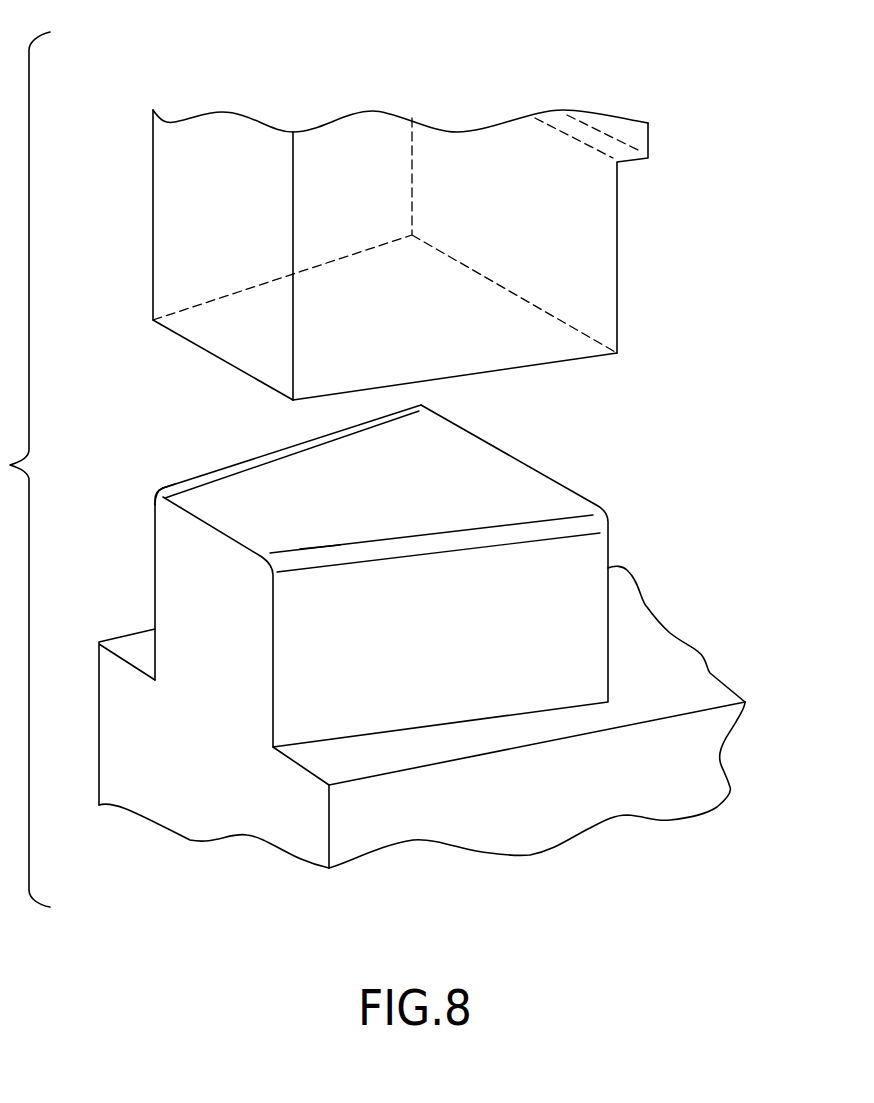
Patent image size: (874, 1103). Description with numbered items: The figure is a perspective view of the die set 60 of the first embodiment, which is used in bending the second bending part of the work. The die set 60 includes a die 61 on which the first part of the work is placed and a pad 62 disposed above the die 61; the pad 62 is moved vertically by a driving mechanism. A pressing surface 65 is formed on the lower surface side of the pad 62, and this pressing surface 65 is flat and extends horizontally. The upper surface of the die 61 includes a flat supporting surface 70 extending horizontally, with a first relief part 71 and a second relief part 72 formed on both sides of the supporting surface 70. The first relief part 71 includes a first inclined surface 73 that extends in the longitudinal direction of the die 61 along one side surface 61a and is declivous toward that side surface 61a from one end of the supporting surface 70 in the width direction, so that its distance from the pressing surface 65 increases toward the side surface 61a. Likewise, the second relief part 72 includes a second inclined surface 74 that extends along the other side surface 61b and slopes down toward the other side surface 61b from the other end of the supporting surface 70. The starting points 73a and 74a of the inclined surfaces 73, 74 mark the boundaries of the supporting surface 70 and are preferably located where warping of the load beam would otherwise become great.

The die set 60 is at (492, 97).
The pad 62 is at (603, 243).
The pressing surface 65 is at (512, 353).
The supporting surface 70 is at (282, 482).
The first relief part 71 is at (166, 480).
The second relief part 72 is at (324, 562).
The first inclined surface 73 is at (208, 471).
The starting point of the first inclined surface 73a is at (317, 437).
The second inclined surface 74 is at (407, 547).
The starting point of the second inclined surface 74a is at (490, 523).
The die 61 is at (583, 600).
The one side surface of the die 61a is at (150, 563).
The other side surface of the die 61b is at (398, 702).